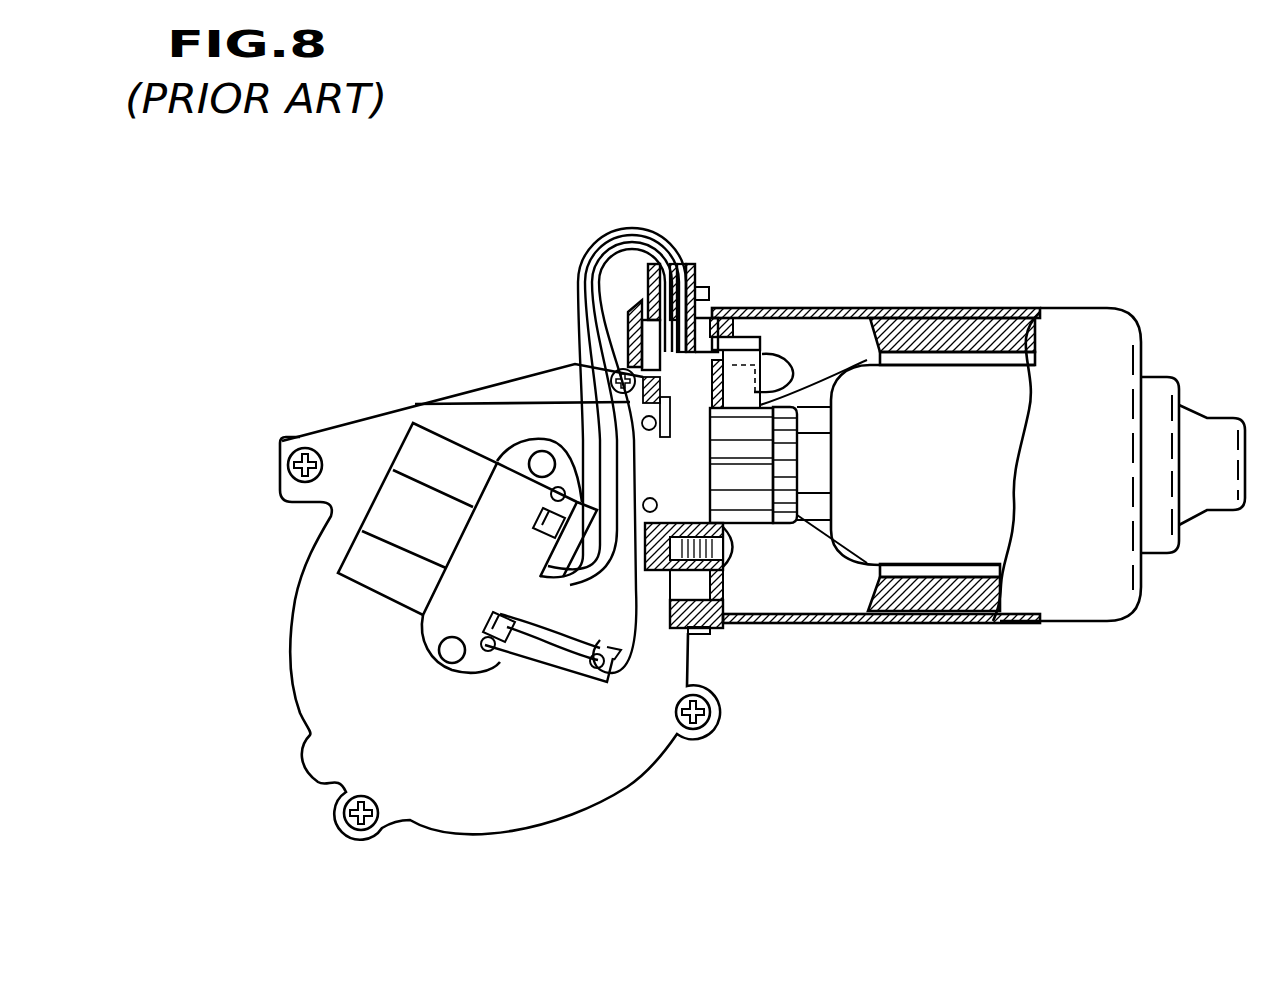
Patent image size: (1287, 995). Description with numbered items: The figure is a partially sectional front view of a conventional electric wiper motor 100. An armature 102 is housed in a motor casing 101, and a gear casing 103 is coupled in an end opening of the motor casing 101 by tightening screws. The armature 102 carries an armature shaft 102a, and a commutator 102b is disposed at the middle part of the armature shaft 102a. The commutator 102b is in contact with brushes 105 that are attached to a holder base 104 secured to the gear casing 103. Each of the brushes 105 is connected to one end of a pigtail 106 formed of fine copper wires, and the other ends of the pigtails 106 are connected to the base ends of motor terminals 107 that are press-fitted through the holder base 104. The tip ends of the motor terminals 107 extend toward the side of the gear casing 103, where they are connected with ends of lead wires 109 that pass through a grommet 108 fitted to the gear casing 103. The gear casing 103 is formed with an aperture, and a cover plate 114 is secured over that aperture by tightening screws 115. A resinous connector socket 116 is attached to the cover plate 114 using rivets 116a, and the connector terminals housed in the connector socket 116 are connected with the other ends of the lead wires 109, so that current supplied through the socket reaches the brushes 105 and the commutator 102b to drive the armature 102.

The wiper motor 100 is at (718, 122).
The motor casing 101 is at (847, 364).
The armature 102 is at (972, 352).
The armature shaft 102a is at (817, 493).
The commutator 102b is at (760, 520).
The gear casing 103 is at (630, 300).
The holder base 104 is at (716, 320).
The brushes 105 is at (868, 335).
The pigtails 106 is at (770, 355).
The motor terminals 107 is at (742, 345).
The grommet 108 is at (693, 263).
The lead wires 109 is at (604, 245).
The cover plate 114 is at (573, 808).
The screws 115 is at (319, 445).
The connector socket 116 is at (430, 427).
The rivets 116a is at (540, 447).